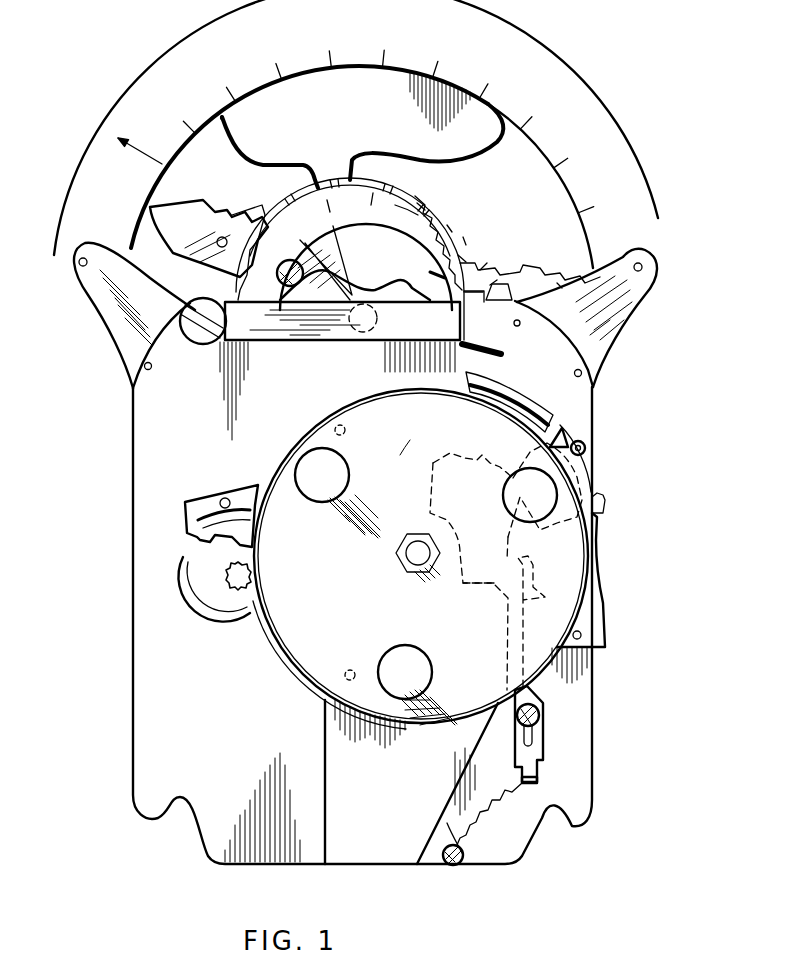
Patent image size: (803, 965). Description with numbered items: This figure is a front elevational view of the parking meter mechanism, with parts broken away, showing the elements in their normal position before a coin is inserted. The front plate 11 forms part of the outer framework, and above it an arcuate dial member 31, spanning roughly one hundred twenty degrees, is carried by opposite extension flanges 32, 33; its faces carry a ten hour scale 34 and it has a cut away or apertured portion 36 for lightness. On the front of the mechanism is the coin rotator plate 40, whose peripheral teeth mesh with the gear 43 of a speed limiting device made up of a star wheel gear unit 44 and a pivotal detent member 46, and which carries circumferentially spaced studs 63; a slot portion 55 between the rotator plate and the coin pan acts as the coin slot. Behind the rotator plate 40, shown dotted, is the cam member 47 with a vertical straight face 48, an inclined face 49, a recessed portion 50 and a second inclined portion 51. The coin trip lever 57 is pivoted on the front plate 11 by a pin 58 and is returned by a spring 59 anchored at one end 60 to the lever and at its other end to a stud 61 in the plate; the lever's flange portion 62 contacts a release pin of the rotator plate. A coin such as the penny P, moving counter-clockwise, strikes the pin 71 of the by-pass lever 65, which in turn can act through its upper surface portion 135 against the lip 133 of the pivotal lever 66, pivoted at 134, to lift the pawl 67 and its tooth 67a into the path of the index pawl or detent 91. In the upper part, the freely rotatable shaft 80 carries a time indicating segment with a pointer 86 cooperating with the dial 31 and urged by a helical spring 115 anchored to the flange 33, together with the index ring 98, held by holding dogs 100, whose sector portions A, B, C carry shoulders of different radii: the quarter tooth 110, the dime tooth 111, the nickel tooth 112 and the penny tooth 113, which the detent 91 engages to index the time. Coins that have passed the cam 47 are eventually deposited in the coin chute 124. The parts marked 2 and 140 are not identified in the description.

The timing device 2 is at (132, 421).
The front plate 11 is at (147, 763).
The dial member 31 is at (570, 80).
The extension flange 32 is at (105, 302).
The extension flange 33 is at (623, 302).
The scale 34 is at (595, 210).
The apertured portion 36 is at (592, 227).
The coin rotator plate 40 is at (310, 667).
The gear 43 is at (229, 580).
The star wheel gear unit 44 is at (215, 612).
The pivotal detent member 46 is at (204, 504).
The cam member 47 is at (470, 584).
The vertical straight face 48 is at (510, 548).
The inclined face 49 is at (490, 463).
The recessed portion 50 is at (477, 463).
The second inclined portion 51 is at (447, 460).
The slot portion 55 is at (600, 547).
The coin trip lever 57 is at (506, 627).
The pin 58 is at (523, 720).
The spring 59 is at (484, 822).
The end 60 is at (540, 779).
The stud 61 is at (448, 862).
The flange portion 62 is at (517, 573).
The studs 63 is at (351, 668).
The by-pass lever 65 is at (570, 432).
The pivotal lever 66 is at (297, 335).
The pawl 67 is at (462, 294).
The tooth 67a is at (478, 305).
The pin 71 is at (587, 447).
The shaft 80 is at (362, 332).
The indicator 86 is at (182, 222).
The index pawl 91 is at (502, 290).
The index ring 98 is at (393, 222).
The holding dogs 100 is at (433, 273).
The quarter tooth 110 is at (400, 207).
The ten cent tooth 111 is at (283, 198).
The five cent tooth 112 is at (330, 197).
The one cent tooth 113 is at (373, 193).
The helical spring 115 is at (557, 283).
The coin chute 124 is at (394, 855).
The lip 133 is at (498, 349).
The pivot 134 is at (198, 333).
The upper surface portion 135 is at (513, 380).
The indicator 140 is at (219, 120).
The sector portion A is at (418, 203).
The sector portion B is at (463, 260).
The sector portion C is at (310, 222).
The penny coin P is at (585, 483).